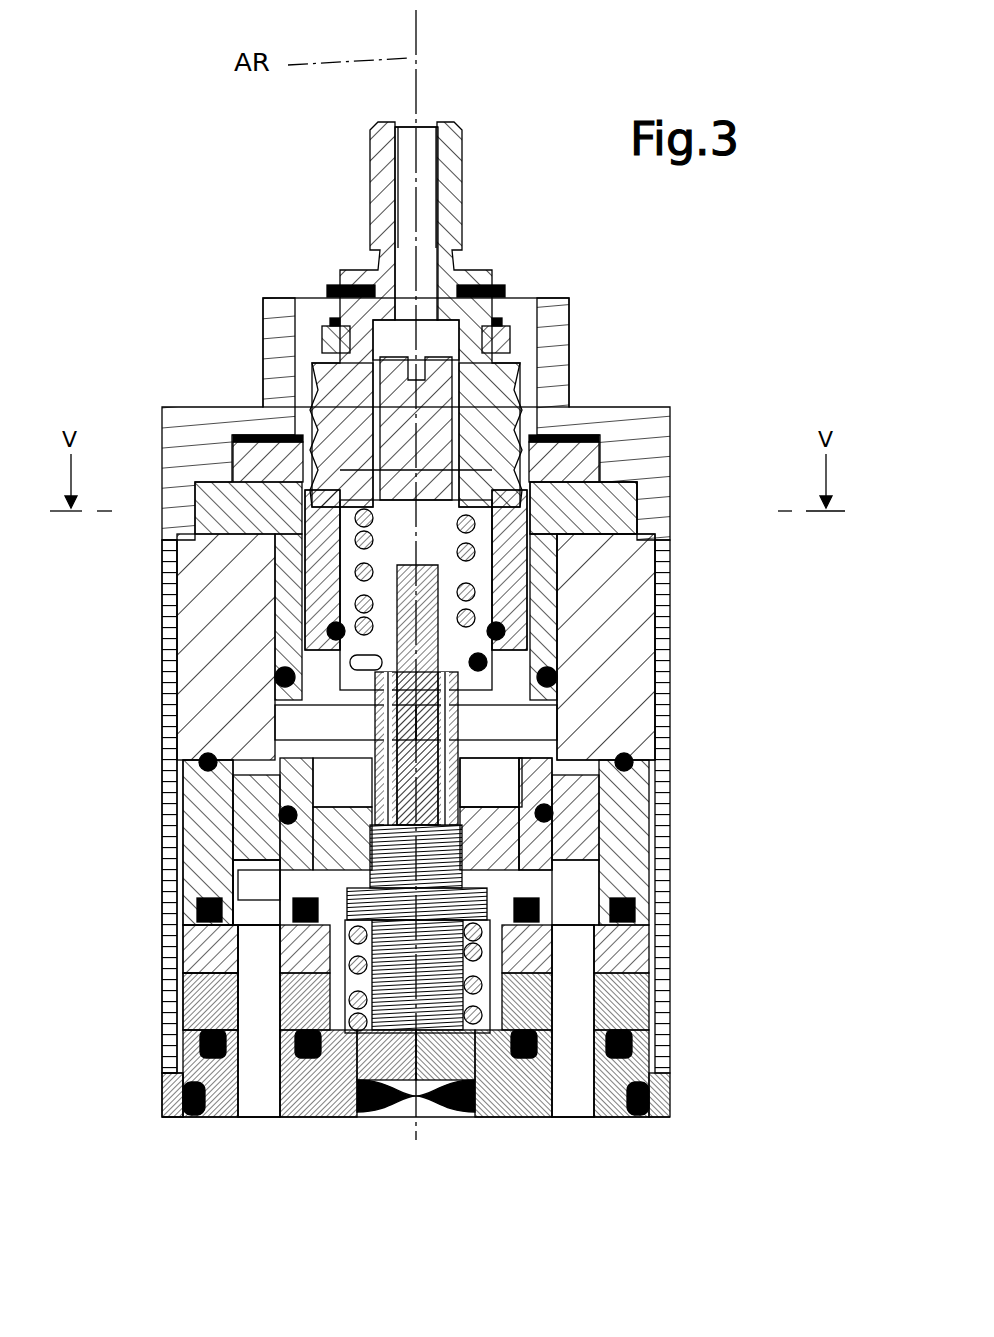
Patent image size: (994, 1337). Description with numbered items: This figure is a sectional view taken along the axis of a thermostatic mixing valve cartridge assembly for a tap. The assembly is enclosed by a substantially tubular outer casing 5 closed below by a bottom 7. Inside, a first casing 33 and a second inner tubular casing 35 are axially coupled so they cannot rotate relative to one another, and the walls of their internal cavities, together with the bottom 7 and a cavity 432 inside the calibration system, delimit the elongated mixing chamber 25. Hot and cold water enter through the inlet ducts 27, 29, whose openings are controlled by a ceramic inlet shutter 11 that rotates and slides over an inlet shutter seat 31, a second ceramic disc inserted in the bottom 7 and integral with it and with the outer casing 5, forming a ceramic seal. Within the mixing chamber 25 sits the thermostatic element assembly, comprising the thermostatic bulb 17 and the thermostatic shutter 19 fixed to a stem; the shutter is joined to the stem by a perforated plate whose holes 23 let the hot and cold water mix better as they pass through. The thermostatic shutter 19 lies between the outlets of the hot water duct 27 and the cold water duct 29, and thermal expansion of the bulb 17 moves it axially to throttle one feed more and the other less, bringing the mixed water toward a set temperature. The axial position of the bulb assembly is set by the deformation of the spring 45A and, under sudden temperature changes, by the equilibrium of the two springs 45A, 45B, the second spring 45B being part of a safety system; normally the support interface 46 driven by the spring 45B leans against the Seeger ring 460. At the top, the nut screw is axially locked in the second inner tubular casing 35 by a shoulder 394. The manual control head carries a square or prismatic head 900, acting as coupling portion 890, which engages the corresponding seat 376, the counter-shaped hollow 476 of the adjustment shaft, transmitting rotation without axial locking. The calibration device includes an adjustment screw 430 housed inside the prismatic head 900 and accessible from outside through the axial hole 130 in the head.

The outer casing 5 is at (175, 697).
The bottom 7 is at (172, 1100).
The inlet shutter 11 is at (213, 950).
The thermostatic bulb 17 is at (385, 1005).
The thermostatic shutter 19 is at (247, 863).
The holes of the perforated plate 23 is at (492, 838).
The mixing chamber 25 is at (490, 782).
The hot water inlet duct 27 is at (247, 1083).
The cold water inlet duct 29 is at (585, 1085).
The inlet shutter seat 31 is at (208, 997).
The first casing 33 is at (235, 801).
The second inner tubular casing 35 is at (635, 646).
The spring 45A is at (483, 977).
The second spring 45B is at (535, 603).
The support interface 46 is at (385, 583).
The axial hole 130 is at (425, 140).
The square or prismatic seat 376 is at (484, 503).
The counter-shaped hollow 476 is at (322, 570).
The shoulder 394 is at (616, 511).
The adjustment screw 430 is at (440, 392).
The cavity 432 is at (460, 575).
The Seeger ring 460 is at (487, 662).
The coupling portion 890 is at (368, 380).
The square or prismatic head 900 is at (489, 435).